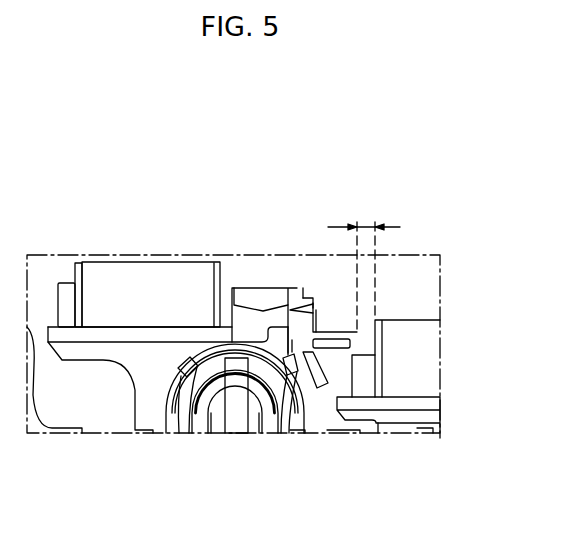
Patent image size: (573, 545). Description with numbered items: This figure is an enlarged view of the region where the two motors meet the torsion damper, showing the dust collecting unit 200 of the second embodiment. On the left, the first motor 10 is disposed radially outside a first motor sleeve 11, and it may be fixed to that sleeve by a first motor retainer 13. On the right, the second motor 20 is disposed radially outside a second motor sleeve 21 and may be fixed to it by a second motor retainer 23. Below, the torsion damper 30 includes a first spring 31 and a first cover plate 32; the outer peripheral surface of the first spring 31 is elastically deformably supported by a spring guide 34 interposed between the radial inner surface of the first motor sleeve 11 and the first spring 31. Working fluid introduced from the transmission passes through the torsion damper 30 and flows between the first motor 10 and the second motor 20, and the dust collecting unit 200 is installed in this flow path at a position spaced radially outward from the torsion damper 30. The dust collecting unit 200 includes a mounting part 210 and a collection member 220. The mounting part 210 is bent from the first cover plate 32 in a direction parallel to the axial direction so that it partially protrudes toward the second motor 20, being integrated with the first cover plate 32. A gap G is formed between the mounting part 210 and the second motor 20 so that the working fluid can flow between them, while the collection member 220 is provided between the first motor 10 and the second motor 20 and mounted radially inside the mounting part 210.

The first motor 10 is at (190, 270).
The first motor sleeve 11 is at (125, 337).
The first motor retainer 13 is at (63, 289).
The dust collecting unit 200 is at (335, 306).
The mounting part 210 is at (316, 333).
The collection member 220 is at (343, 344).
The second motor 20 is at (408, 328).
The second motor sleeve 21 is at (417, 403).
The second motor retainer 23 is at (365, 368).
The torsion damper 30 is at (313, 434).
The first spring 31 is at (237, 420).
The first cover plate 32 is at (285, 420).
The spring guide 34 is at (183, 407).
The gap G is at (364, 260).